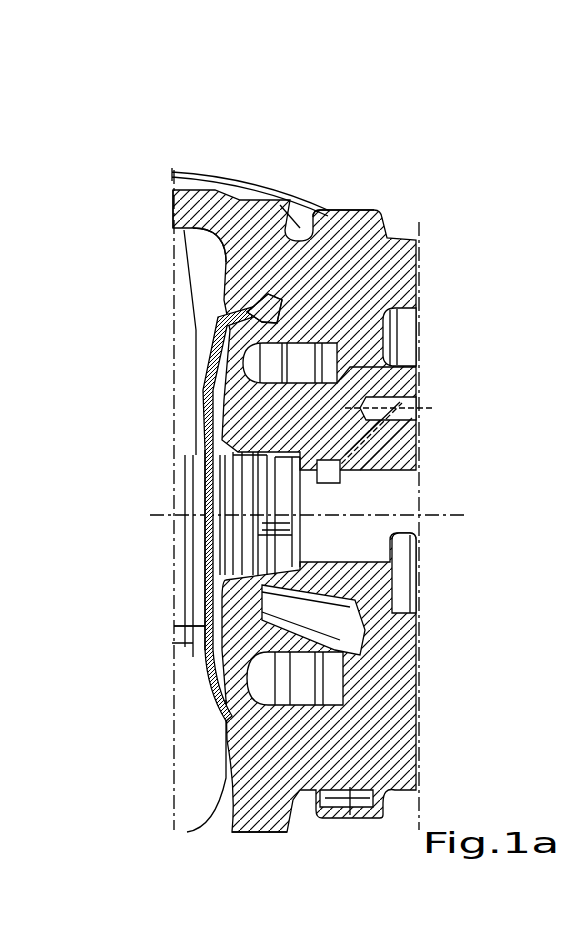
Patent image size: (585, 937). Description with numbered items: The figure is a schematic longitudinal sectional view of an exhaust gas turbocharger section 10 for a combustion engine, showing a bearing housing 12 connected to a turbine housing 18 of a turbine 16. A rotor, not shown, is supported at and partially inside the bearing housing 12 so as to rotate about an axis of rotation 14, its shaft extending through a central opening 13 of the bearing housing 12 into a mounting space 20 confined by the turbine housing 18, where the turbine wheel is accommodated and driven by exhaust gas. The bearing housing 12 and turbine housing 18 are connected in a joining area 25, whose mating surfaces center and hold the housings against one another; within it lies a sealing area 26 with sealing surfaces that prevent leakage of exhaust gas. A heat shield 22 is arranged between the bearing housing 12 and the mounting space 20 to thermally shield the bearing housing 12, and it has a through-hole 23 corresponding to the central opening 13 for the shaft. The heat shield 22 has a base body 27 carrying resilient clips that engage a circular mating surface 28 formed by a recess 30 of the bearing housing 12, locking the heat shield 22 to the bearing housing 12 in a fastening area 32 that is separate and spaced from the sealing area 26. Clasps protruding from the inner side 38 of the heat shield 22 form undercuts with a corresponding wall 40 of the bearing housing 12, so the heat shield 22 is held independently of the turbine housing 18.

The exhaust gas turbocharger section 10 is at (308, 870).
The bearing housing 12 is at (380, 224).
The central opening 13 is at (420, 470).
The axis of rotation 14 is at (425, 515).
The turbine 16 is at (221, 128).
The turbine housing 18 is at (280, 212).
The mounting space 20 is at (192, 282).
The heat shield 22 is at (214, 346).
The through-hole 23 is at (196, 531).
The joining area 25 is at (354, 206).
The sealing area 26 is at (352, 258).
The base body 27 is at (196, 650).
The mating surface 28 is at (237, 307).
The recess 30 is at (269, 290).
The fastening area 32 is at (278, 692).
The inner side 38 is at (203, 392).
The wall 40 is at (300, 320).